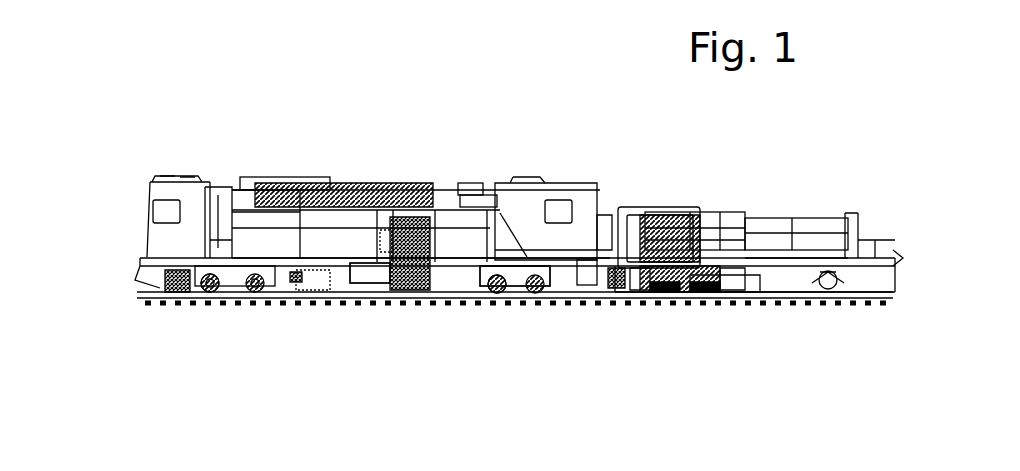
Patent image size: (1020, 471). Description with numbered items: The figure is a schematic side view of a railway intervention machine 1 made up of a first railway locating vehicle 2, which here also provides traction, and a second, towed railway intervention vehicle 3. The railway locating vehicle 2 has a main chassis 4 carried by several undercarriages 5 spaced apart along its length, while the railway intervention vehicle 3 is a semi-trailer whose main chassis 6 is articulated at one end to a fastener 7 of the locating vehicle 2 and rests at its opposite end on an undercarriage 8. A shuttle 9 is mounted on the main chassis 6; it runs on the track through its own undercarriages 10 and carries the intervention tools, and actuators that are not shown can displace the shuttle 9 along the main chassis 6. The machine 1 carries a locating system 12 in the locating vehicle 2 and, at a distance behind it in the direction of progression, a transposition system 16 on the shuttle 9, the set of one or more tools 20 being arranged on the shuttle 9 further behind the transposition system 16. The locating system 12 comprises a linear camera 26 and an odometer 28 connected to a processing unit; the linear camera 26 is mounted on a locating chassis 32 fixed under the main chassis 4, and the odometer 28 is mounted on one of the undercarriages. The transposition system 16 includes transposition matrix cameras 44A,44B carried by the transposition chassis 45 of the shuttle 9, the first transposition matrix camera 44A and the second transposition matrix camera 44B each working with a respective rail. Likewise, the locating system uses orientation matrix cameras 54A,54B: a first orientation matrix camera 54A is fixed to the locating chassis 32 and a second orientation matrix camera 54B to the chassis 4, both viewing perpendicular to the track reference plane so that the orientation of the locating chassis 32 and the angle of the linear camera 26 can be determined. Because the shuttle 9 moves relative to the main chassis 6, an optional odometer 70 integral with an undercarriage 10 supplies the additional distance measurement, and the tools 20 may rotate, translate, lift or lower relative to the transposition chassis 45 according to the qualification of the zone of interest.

The railway intervention machine 1 is at (585, 70).
The railway locating vehicle 2 is at (416, 148).
The railway intervention vehicle 3 is at (810, 148).
The main chassis 4 is at (343, 265).
The undercarriages 5 is at (222, 292).
The main chassis 6 is at (797, 265).
The fastener 7 is at (604, 266).
The undercarriage 8 is at (828, 292).
The shuttle 9 is at (709, 211).
The undercarriages 10 is at (627, 292).
The locating system 12 is at (278, 149).
The transposition system 16 is at (680, 188).
The set of one or more tools 20 is at (713, 321).
The linear camera 26 is at (300, 277).
The odometer 28 is at (560, 292).
The locating chassis 32 is at (296, 277).
The transposition matrix cameras 44A,44B is at (584, 347).
The first transposition matrix camera 44A is at (584, 347).
The second transposition matrix camera 44B is at (617, 277).
The transposition chassis 45 is at (640, 206).
The orientation matrix cameras 54A,54B is at (292, 348).
The first orientation matrix camera 54A is at (292, 348).
The second orientation matrix camera 54B is at (297, 278).
The odometer 70 is at (650, 292).